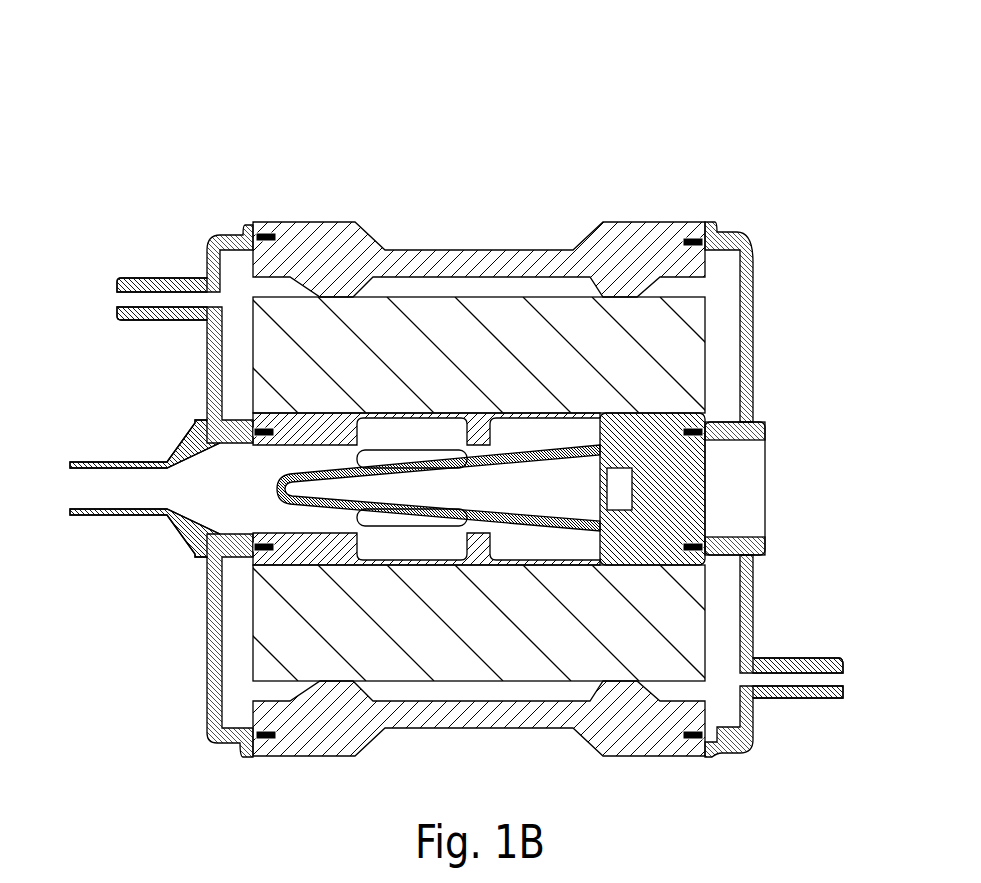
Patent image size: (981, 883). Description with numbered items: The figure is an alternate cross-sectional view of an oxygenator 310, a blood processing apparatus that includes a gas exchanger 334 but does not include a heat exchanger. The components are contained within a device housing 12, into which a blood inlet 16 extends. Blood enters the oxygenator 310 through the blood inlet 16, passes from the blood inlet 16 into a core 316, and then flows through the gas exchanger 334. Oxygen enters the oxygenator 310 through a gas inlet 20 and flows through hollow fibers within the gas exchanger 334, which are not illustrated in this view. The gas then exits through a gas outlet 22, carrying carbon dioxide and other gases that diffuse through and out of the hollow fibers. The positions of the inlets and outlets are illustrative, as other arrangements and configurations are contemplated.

The oxygenator 310 is at (717, 115).
The device housing 12 is at (665, 222).
The gas inlet 20 is at (121, 299).
The blood inlet 16 is at (78, 483).
The gas outlet 22 is at (833, 680).
The core 316 is at (308, 518).
The gas exchanger 334 is at (454, 647).